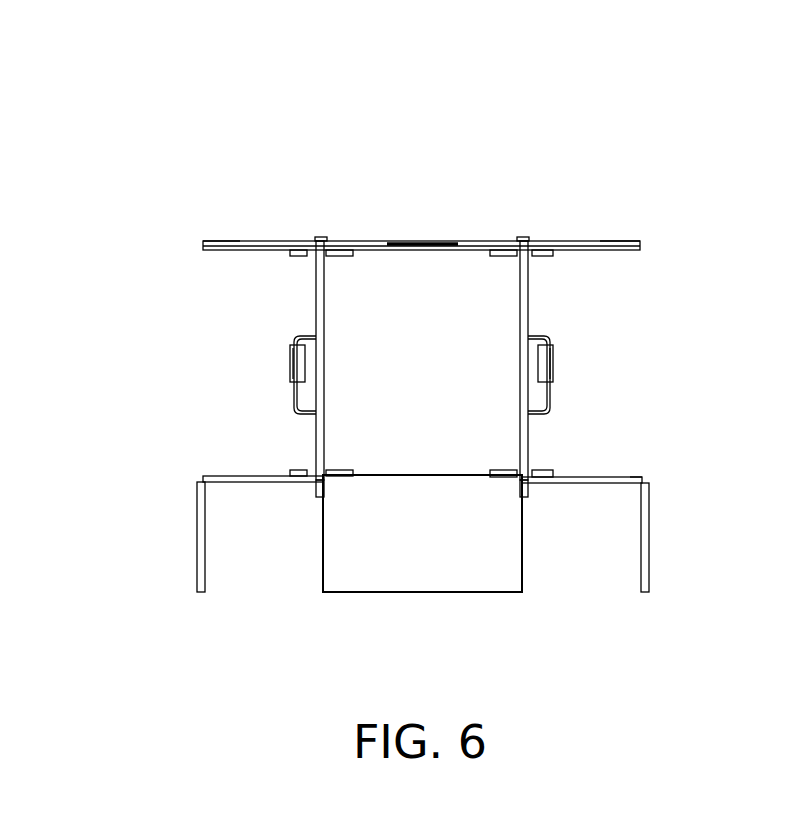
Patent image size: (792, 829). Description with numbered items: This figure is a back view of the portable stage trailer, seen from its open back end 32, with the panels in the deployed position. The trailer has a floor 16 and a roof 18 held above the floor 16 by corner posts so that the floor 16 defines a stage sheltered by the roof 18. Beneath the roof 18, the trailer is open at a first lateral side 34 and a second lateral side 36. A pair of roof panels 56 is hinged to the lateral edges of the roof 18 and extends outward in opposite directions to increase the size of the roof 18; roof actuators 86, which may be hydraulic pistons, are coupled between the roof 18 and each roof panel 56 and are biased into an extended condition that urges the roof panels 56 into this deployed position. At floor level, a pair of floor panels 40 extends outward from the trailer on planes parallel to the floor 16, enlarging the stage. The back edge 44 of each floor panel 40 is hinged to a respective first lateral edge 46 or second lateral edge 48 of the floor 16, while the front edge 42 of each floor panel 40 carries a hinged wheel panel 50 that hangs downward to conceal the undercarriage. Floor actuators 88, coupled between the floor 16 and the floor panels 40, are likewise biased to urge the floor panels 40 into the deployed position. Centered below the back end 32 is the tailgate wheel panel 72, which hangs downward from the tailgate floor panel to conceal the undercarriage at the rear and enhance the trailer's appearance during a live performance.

The floor 16 is at (430, 474).
The roof 18 is at (423, 241).
The back end 32 is at (340, 256).
The first lateral side 34 is at (285, 287).
The second lateral side 36 is at (556, 292).
The floor panels 40 is at (242, 474).
The front edge 42 is at (648, 480).
The back edge 44 is at (522, 485).
The first lateral edge 46 is at (307, 482).
The second lateral edge 48 is at (522, 482).
The wheel panels 50 is at (196, 545).
The roof panels 56 is at (220, 241).
The tailgate wheel panel 72 is at (388, 553).
The roof actuators 86 is at (380, 290).
The floor actuators 88 is at (349, 472).